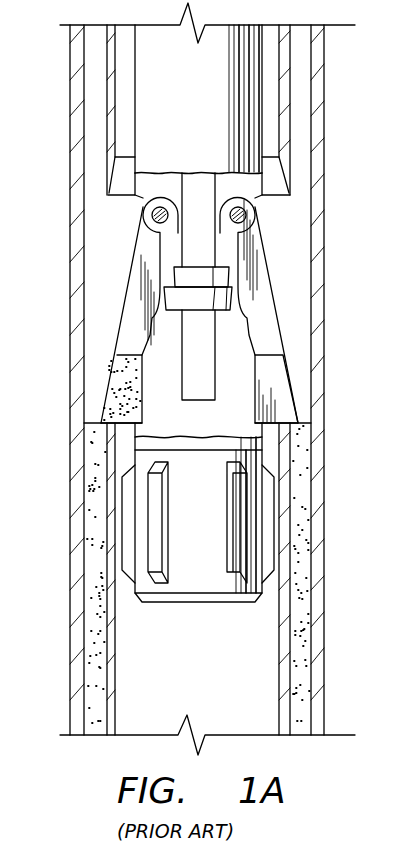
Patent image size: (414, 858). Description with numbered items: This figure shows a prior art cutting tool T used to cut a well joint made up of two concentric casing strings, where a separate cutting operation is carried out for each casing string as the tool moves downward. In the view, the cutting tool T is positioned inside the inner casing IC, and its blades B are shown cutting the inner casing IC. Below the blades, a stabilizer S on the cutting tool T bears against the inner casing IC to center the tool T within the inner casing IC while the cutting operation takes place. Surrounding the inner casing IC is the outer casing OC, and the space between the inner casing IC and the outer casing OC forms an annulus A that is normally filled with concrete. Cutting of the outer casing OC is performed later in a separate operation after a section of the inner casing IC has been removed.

The cutting tool T is at (218, 102).
The inner casing IC is at (287, 137).
The outer casing OC is at (318, 225).
The blades B is at (110, 382).
The stabilizer S is at (270, 500).
The annulus A is at (302, 598).